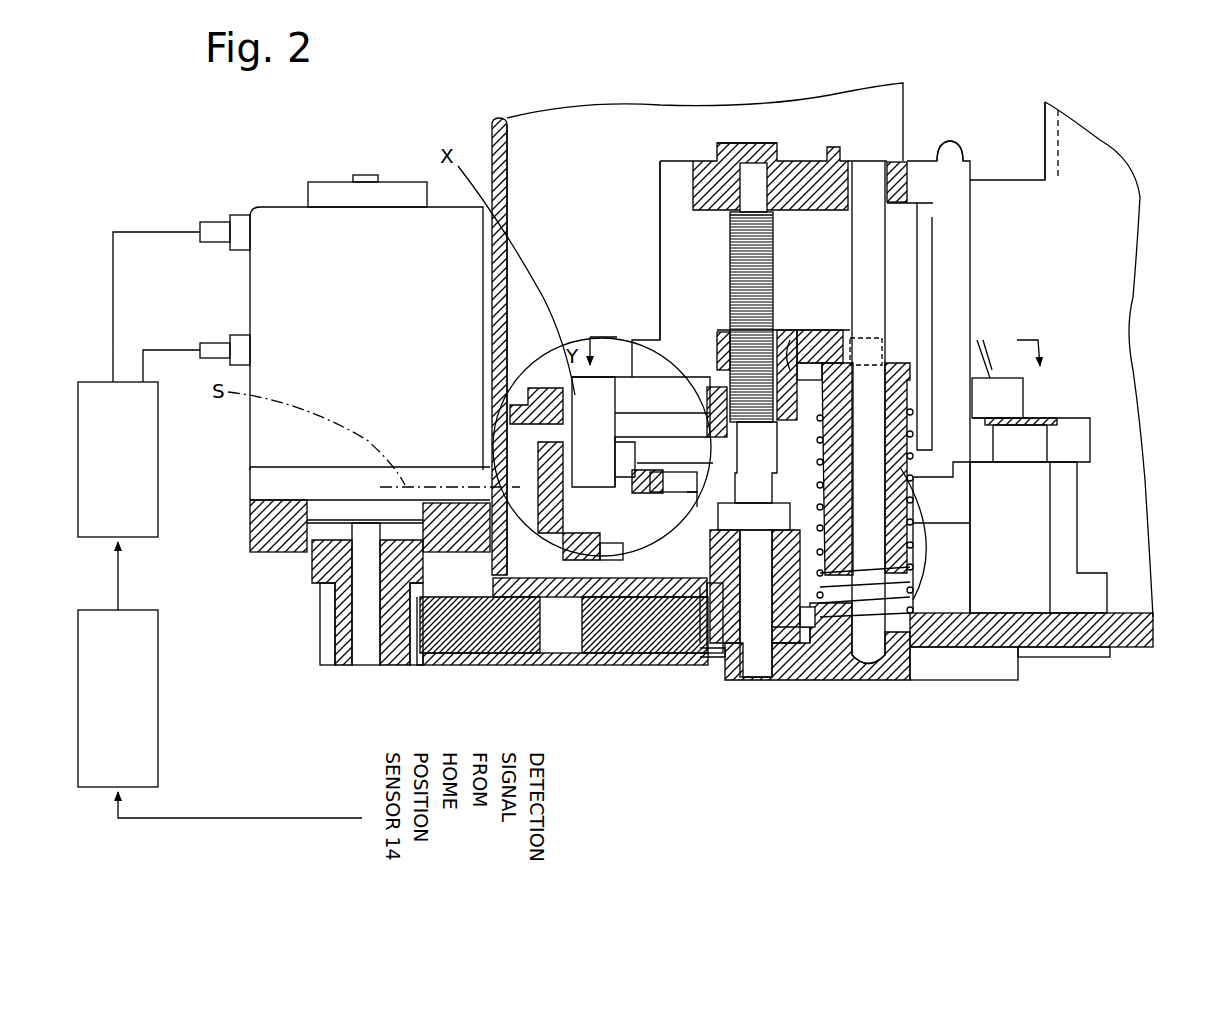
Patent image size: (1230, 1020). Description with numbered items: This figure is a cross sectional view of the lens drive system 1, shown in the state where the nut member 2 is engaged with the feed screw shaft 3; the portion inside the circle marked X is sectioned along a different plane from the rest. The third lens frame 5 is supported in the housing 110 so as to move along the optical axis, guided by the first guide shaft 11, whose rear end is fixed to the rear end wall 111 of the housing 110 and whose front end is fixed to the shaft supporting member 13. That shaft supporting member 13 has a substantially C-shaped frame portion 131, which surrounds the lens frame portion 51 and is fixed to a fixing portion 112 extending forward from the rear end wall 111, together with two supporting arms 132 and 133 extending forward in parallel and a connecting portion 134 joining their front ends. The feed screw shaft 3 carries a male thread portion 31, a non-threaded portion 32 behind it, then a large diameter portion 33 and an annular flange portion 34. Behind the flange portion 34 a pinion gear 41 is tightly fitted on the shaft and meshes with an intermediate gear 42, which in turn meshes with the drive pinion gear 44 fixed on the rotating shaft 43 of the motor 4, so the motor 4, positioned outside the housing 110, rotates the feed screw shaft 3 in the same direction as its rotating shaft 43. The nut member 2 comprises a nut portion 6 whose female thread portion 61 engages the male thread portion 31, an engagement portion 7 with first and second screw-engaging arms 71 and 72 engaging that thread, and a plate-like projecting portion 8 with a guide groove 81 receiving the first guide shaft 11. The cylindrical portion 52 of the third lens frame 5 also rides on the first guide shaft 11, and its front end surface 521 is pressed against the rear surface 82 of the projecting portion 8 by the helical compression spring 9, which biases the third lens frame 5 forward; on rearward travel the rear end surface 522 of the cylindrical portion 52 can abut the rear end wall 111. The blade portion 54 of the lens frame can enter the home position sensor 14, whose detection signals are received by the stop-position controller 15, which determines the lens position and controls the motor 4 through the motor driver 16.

The lens drive system 1 is at (1010, 236).
The nut member 2 is at (818, 330).
The feed screw shaft 3 is at (790, 243).
The motor 4 is at (290, 253).
The third lens frame 5 is at (992, 343).
The nut portion 6 is at (628, 462).
The engagement portion 7 is at (808, 330).
The projecting portion 8 is at (770, 355).
The helical compression spring 9 is at (818, 612).
The first guide shaft 11 is at (870, 237).
The shaft supporting member 13 is at (703, 152).
The home position sensor 14 is at (532, 585).
The stop-position controller 15 is at (158, 700).
The motor driver 16 is at (158, 450).
The male thread portion 31 is at (680, 237).
The non-threaded portion 32 is at (688, 660).
The large diameter portion 33 is at (758, 575).
The annular flange portion 34 is at (780, 575).
The pinion gear 41 is at (722, 647).
The intermediate gear 42 is at (424, 660).
The rotating shaft 43 is at (360, 662).
The pinion gear (drive gear) 44 is at (320, 633).
The lens frame portion 51 is at (1012, 387).
The cylindrical portion 52 is at (932, 615).
The blade portion 54 is at (565, 600).
The female thread portion 61 is at (660, 478).
The first screw-engaging arm 71 is at (717, 363).
The second screw-engaging arm 72 is at (787, 368).
The guide groove 81 is at (805, 330).
The rear surface 82 is at (975, 402).
The housing 110 is at (487, 132).
The rear end wall 111 is at (983, 645).
The fixing portion 112 is at (1023, 523).
The frame portion 131 is at (1073, 443).
The supporting arm 132 is at (625, 415).
The supporting arm 133 is at (953, 243).
The connecting portion 134 is at (780, 240).
The front end surface 521 is at (893, 370).
The rear end surface 522 is at (840, 600).